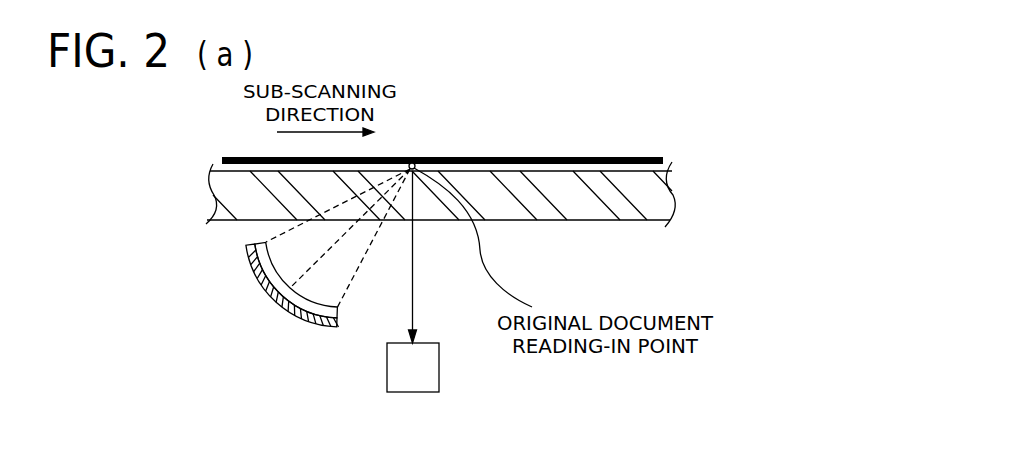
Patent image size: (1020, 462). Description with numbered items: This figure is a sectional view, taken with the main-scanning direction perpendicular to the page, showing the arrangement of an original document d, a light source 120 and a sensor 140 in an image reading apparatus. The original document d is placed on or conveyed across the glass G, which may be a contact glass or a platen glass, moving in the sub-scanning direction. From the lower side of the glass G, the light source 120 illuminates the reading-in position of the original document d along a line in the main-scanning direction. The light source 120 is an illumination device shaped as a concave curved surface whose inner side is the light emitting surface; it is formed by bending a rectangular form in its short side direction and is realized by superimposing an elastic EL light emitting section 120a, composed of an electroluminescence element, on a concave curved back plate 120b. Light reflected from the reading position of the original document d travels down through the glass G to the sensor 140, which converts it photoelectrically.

The light source 120 is at (181, 280).
The EL light emitting section 120a is at (268, 253).
The back plate 120b is at (268, 297).
The sensor 140 is at (431, 343).
The glass G is at (600, 221).
The original document d is at (509, 156).